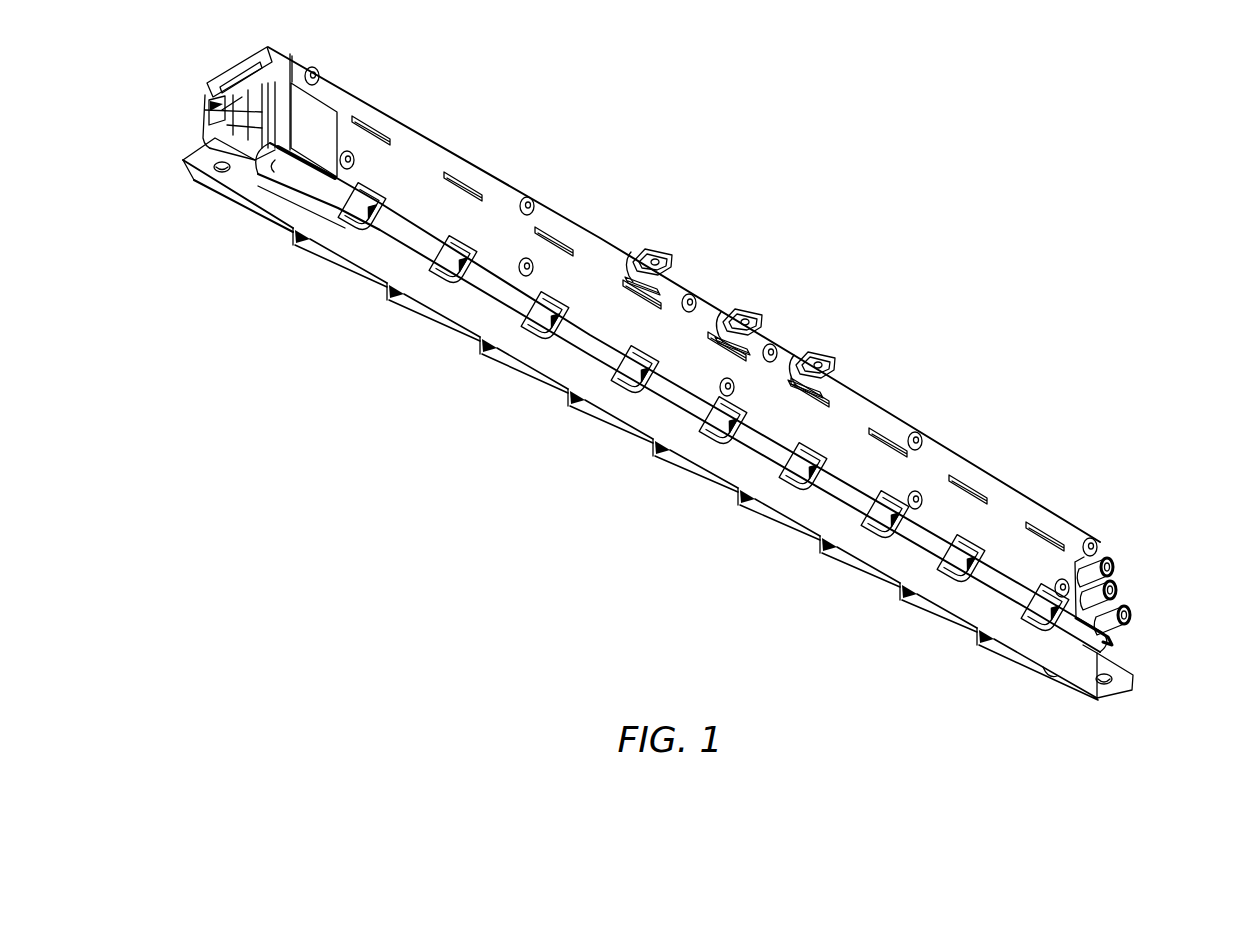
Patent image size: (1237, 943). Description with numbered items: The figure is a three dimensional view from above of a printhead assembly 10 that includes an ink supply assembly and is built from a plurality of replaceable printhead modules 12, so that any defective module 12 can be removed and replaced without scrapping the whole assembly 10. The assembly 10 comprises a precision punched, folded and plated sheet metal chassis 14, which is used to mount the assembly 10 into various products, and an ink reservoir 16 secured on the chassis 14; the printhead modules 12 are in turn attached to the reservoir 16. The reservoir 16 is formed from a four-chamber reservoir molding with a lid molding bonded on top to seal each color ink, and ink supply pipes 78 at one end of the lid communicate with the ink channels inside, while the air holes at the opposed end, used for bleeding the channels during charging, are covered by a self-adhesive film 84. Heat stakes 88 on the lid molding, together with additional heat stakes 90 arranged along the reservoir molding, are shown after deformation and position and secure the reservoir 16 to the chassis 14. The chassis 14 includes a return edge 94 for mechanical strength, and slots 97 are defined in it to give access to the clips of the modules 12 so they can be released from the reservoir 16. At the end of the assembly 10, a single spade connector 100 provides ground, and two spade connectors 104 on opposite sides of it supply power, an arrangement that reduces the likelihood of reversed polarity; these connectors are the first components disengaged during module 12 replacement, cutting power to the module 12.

The printhead assembly 10 is at (924, 256).
The printhead module 12 is at (507, 360).
The chassis 14 is at (1040, 518).
The ink reservoir 16 is at (236, 109).
The ink supply pipes 78 is at (1133, 590).
The self-adhesive film 84 is at (318, 118).
The heat stakes 88 is at (532, 268).
The additional heat stakes 90 is at (534, 206).
The return edge 94 is at (667, 273).
The slots 97 is at (640, 354).
The spade connector 100 is at (753, 312).
The spade connectors 104 is at (665, 258).